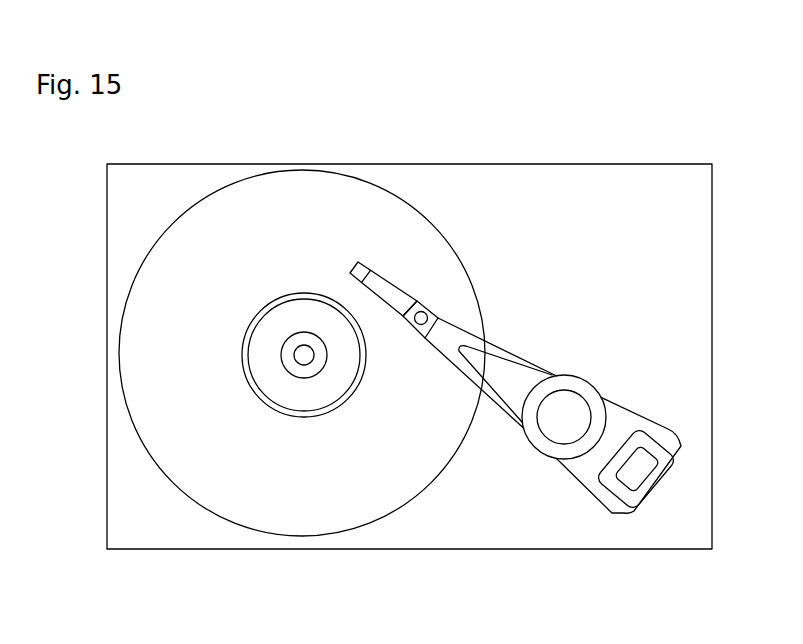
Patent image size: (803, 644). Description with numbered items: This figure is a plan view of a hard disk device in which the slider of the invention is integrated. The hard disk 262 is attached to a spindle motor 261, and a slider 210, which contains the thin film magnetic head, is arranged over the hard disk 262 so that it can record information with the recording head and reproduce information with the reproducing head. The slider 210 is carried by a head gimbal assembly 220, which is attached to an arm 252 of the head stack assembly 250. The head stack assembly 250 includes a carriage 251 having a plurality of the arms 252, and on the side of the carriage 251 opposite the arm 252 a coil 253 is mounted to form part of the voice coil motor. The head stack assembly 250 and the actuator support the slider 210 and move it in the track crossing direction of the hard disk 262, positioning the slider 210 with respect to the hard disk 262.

The slider 210 is at (371, 264).
The head gimbal assembly 220 is at (398, 312).
The head stack assembly 250 is at (568, 478).
The carriage 251 is at (570, 374).
The arm 252 is at (505, 410).
The coil 253 is at (662, 484).
The spindle motor 261 is at (304, 365).
The hard disk 262 is at (237, 526).